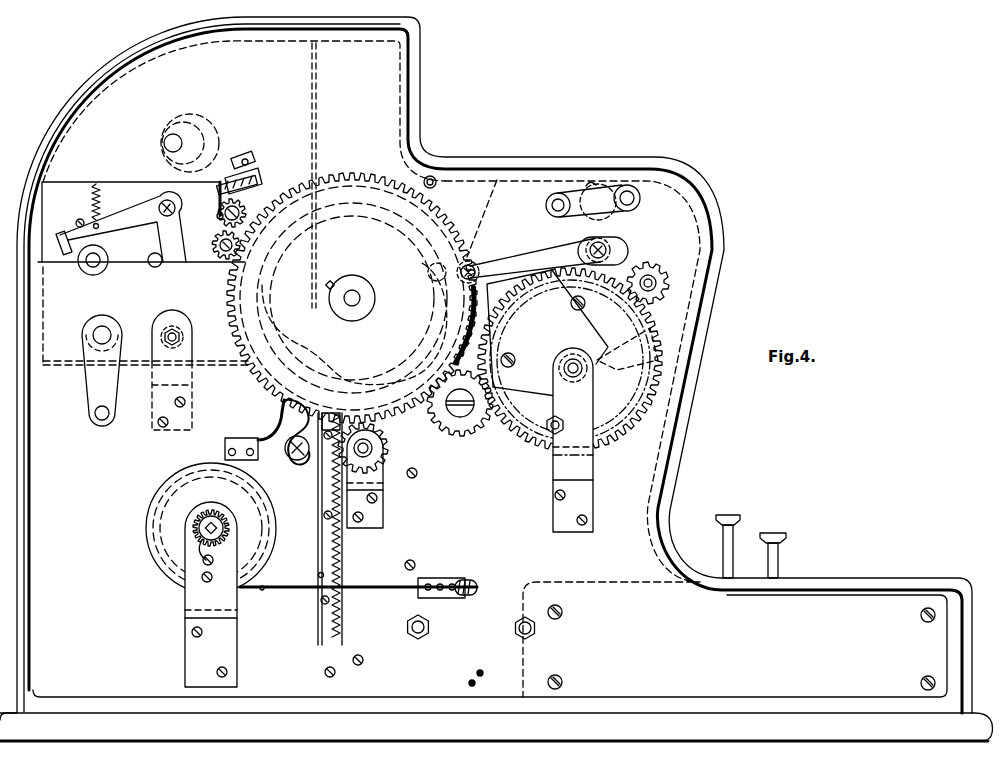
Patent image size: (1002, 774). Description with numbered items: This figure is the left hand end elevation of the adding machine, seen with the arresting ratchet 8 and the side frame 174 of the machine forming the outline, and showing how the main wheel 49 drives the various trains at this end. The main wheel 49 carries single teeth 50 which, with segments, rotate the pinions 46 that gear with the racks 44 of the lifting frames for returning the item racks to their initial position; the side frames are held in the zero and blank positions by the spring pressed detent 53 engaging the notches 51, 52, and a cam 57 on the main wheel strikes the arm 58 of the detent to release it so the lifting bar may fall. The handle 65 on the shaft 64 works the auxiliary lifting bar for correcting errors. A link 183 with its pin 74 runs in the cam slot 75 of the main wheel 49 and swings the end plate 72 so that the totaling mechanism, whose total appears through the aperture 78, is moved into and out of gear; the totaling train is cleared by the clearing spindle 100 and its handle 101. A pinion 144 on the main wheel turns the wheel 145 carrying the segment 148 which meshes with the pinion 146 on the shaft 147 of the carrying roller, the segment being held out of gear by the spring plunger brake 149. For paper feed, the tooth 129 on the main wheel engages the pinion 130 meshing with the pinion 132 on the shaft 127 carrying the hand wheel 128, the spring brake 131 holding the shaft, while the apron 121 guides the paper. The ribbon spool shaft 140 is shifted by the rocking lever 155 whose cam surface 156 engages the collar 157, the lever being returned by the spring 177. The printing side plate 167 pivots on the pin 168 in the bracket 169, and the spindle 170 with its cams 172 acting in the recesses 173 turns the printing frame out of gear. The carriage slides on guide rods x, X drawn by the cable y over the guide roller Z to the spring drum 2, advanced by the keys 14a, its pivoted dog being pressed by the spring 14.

The spring drum 2 is at (165, 543).
The arresting ratchet 8 is at (412, 75).
The spring 14 is at (735, 515).
The keys 14a is at (774, 533).
The racks 44 is at (322, 501).
The pinions 46 is at (386, 438).
The main wheel 49 is at (350, 283).
The single teeth 50 is at (371, 180).
The notch 51 is at (320, 586).
The notch 52 is at (321, 573).
The spring pressed detent 53 is at (280, 423).
The cam 57 is at (458, 332).
The arm 58 is at (280, 401).
The shaft 64 is at (104, 327).
The handle 65 is at (91, 373).
The end plate 72 is at (530, 186).
The pin 74 is at (436, 277).
The cam slot 75 is at (265, 290).
The aperture 78 is at (570, 440).
The clearing spindle 100 is at (632, 193).
The handle 101 is at (592, 192).
The apron 121 is at (318, 93).
The shaft 127 is at (217, 217).
The hand wheel 128 is at (220, 200).
The tooth 129 is at (406, 190).
The pinion 130 is at (214, 240).
The spring brake 131 is at (233, 172).
The pinion 132 is at (256, 180).
The shaft 140 is at (93, 263).
The pinion 144 is at (459, 428).
The wheel 145 is at (524, 409).
The pinion 146 is at (662, 277).
The shaft 147 is at (649, 278).
The segment 148 is at (560, 290).
The spring plunger brake 149 is at (612, 372).
The rocking lever 155 is at (136, 213).
The cam surface 156 is at (64, 233).
The collar 157 is at (105, 254).
The side plate 167 is at (238, 70).
The pin 168 is at (174, 328).
The bracket 169 is at (194, 381).
The spindle 170 is at (168, 141).
The cam 172 is at (192, 133).
The recess 173 is at (208, 125).
The side frame 174 is at (26, 462).
The spring 177 is at (96, 183).
The link 183 is at (528, 254).
The guide rods x is at (418, 640).
The guide rods X is at (534, 637).
The cable y is at (262, 591).
The guide roller Z is at (462, 578).